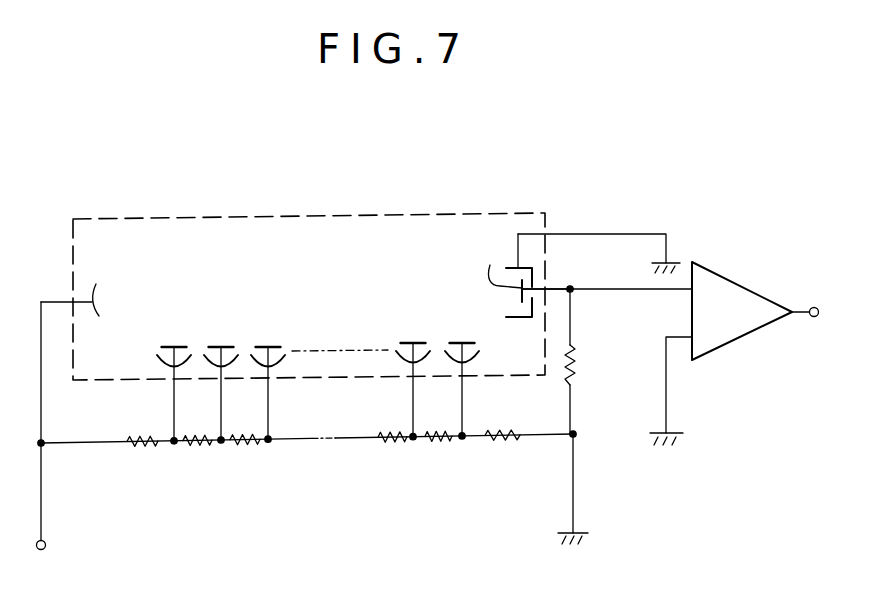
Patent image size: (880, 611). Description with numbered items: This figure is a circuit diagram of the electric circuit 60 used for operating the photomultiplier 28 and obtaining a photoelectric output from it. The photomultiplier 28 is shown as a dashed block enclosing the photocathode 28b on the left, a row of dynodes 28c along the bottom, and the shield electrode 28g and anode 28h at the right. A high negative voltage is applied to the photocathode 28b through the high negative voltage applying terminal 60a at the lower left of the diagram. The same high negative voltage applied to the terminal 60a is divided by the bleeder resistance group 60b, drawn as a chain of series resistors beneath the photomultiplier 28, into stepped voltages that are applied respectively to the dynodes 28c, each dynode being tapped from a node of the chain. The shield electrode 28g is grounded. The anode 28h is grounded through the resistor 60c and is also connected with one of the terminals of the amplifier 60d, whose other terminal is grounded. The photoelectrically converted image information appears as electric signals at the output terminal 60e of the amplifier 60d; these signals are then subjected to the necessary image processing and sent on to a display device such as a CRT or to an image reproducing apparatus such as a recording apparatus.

The photomultiplier 28 is at (144, 205).
The photocathode 28b is at (99, 287).
The dynodes 28c is at (275, 344).
The shield electrode 28g is at (535, 278).
The anode 28h is at (487, 261).
The electric circuit 60 is at (684, 600).
The high negative voltage applying terminal 60a is at (41, 550).
The bleeder resistance group 60b is at (127, 468).
The resistor 60c is at (578, 361).
The amplifier 60d is at (738, 284).
The output terminal 60e is at (813, 307).